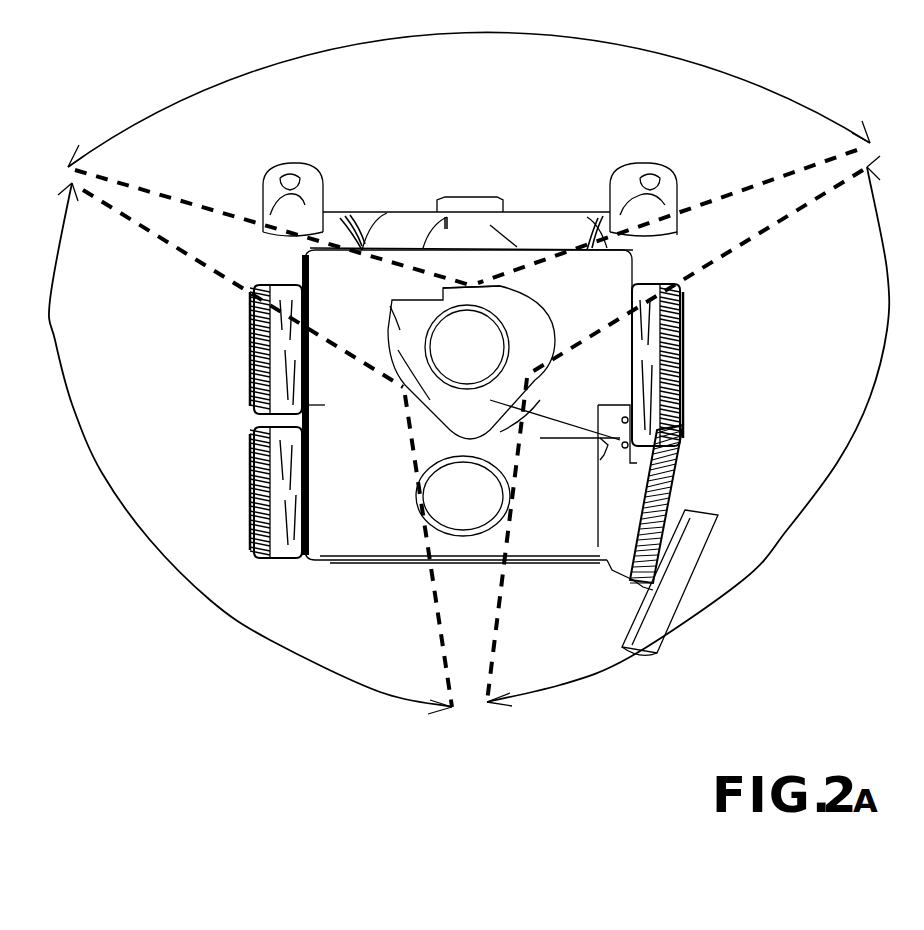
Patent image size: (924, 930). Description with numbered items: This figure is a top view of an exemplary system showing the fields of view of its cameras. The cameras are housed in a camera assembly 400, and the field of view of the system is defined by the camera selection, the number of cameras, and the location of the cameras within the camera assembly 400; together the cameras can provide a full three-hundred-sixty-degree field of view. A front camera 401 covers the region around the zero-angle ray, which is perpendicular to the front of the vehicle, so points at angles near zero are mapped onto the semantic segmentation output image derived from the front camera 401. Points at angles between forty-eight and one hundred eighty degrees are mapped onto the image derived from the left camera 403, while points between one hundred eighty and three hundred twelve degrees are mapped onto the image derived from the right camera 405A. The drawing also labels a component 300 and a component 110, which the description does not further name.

The camera assembly 400 is at (660, 437).
The front camera 401 is at (477, 283).
The left camera 403 is at (400, 390).
The right camera 405A is at (540, 373).
The mounting bracket 300 is at (672, 587).
The mount 110 is at (562, 542).